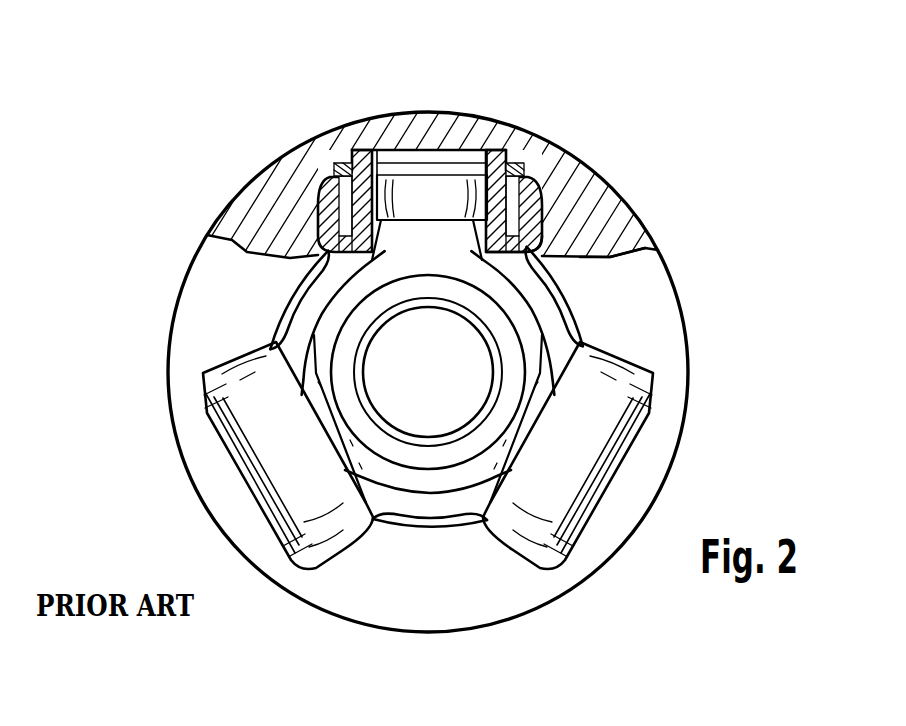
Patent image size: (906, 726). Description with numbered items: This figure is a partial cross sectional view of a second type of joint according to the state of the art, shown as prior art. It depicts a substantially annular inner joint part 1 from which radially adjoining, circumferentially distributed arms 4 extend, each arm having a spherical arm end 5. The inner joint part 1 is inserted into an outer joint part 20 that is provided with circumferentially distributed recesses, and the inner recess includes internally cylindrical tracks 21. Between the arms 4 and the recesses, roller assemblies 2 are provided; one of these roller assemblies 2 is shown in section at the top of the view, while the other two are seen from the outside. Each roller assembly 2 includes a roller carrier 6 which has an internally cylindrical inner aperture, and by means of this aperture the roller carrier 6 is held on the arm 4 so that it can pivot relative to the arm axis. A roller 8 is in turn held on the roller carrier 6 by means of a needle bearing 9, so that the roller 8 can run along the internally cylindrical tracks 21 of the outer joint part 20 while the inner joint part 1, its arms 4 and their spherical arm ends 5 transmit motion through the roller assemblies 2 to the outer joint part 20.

The inner joint part 1 is at (325, 322).
The roller assembly 2 is at (300, 200).
The arm 4 is at (465, 227).
The spherical arm end 5 is at (443, 192).
The roller carrier 6 is at (368, 168).
The roller 8 is at (332, 172).
The needle bearing 9 is at (341, 164).
The outer joint part 20 is at (612, 272).
The internally cylindrical track 21 is at (513, 252).